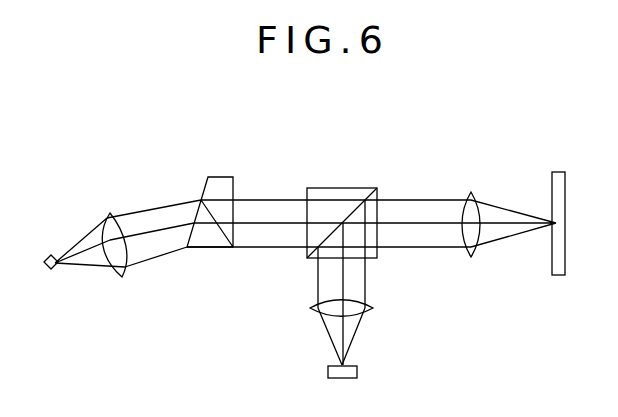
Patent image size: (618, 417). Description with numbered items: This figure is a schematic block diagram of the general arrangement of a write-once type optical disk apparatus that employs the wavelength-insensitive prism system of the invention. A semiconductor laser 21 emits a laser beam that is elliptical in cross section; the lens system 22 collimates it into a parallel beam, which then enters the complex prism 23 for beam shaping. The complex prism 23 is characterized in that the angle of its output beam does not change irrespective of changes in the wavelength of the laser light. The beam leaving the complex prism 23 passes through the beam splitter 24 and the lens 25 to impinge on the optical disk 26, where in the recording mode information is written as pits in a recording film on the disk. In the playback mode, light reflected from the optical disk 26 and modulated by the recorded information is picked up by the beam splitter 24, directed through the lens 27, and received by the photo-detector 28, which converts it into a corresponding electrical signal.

The semiconductor laser 21 is at (46, 261).
The lens system 22 is at (110, 214).
The complex prism 23 is at (220, 177).
The beam splitter 24 is at (343, 188).
The lens 25 is at (470, 195).
The optical disk 26 is at (560, 172).
The lens 27 is at (373, 308).
The photo-detector 28 is at (357, 372).